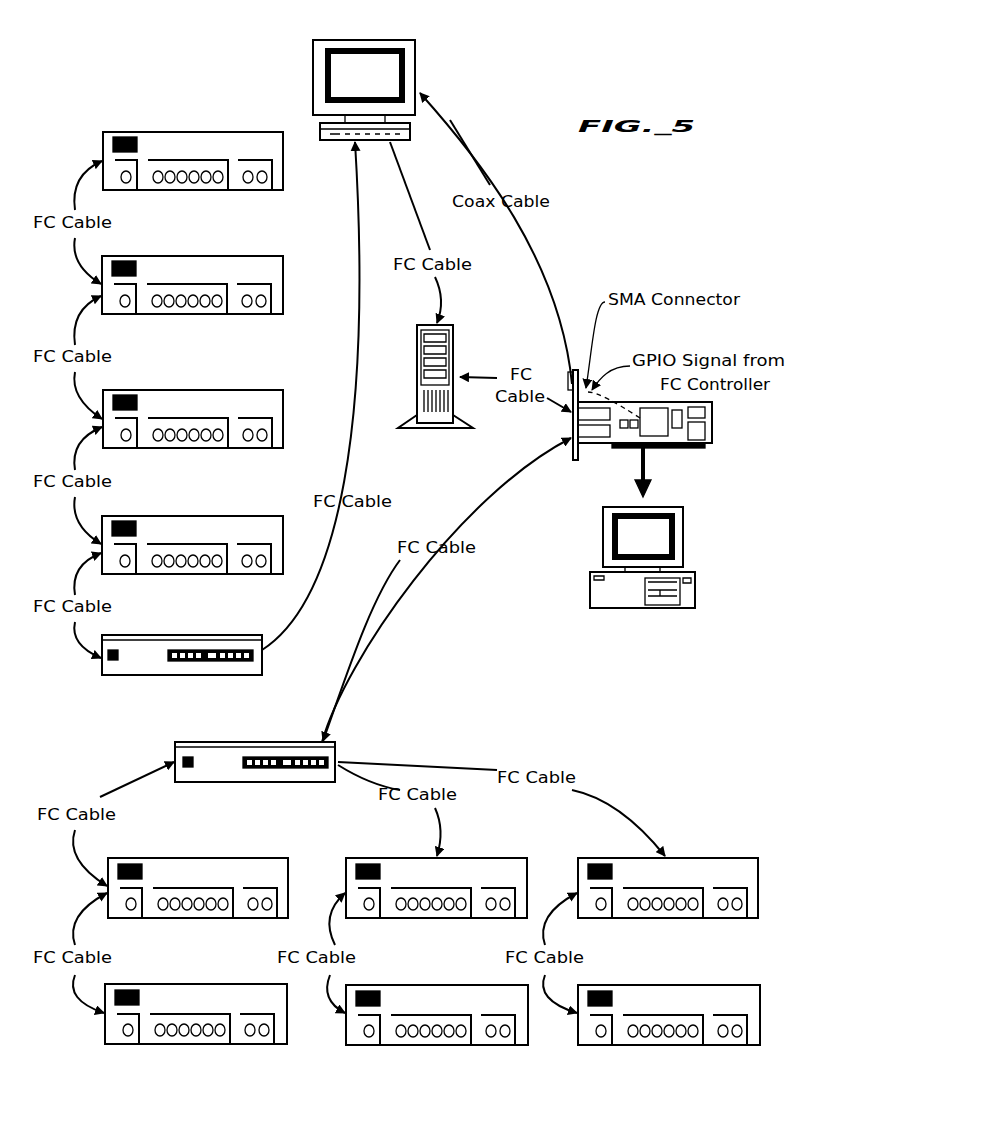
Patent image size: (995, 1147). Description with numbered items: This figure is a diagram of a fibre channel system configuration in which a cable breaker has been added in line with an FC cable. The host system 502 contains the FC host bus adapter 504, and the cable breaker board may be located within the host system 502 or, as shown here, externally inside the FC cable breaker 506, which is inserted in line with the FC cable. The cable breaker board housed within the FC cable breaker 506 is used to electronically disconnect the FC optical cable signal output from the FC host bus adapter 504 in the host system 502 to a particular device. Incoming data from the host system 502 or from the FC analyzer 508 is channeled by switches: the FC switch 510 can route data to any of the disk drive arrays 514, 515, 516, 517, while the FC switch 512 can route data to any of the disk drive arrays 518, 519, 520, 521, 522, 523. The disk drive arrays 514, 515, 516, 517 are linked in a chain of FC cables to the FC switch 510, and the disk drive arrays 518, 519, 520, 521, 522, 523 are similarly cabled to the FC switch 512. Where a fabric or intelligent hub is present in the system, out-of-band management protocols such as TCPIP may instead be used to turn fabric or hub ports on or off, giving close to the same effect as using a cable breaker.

The host system 502 is at (700, 574).
The FC host bus adapter 504 is at (682, 452).
The FC cable breaker 506 is at (464, 344).
The FC analyzer 508 is at (300, 44).
The FC switch 510 is at (210, 633).
The FC switch 512 is at (178, 740).
The disk drive array 514 is at (214, 515).
The disk drive array 515 is at (214, 389).
The disk drive array 516 is at (214, 256).
The disk drive array 517 is at (160, 130).
The disk drive array 518 is at (176, 857).
The disk drive array 519 is at (414, 857).
The disk drive array 520 is at (620, 857).
The disk drive array 521 is at (176, 983).
The disk drive array 522 is at (455, 984).
The disk drive array 523 is at (690, 984).